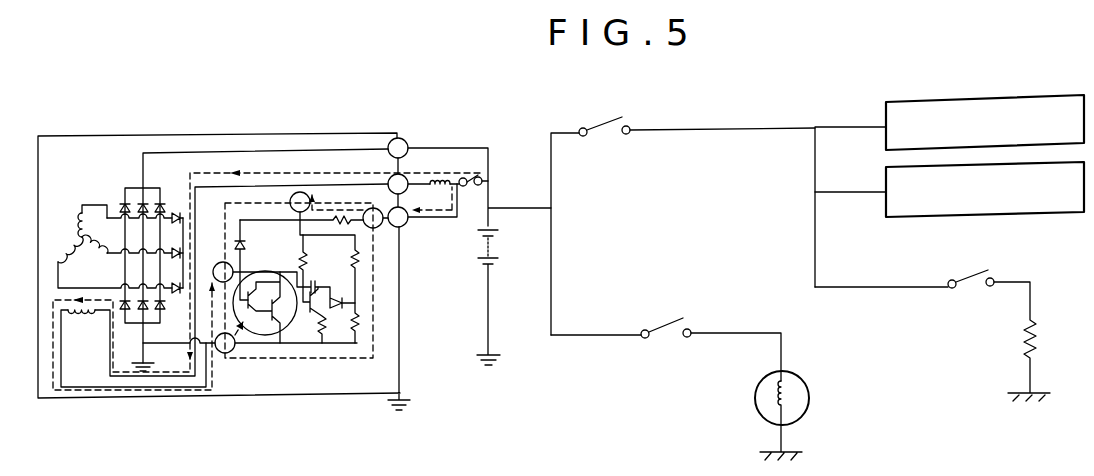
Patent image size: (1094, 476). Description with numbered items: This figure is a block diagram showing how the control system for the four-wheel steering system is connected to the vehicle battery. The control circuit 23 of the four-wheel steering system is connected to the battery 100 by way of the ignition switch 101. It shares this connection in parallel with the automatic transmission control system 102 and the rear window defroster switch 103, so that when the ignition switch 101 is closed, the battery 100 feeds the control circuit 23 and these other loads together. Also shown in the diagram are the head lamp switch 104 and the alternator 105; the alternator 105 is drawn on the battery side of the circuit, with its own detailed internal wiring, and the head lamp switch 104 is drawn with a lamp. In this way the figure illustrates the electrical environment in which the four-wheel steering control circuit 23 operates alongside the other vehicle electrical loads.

The control circuit 23 is at (1024, 98).
The battery 100 is at (471, 269).
The ignition switch 101 is at (600, 119).
The automatic transmission control system 102 is at (1031, 213).
The rear window defroster switch 103 is at (967, 267).
The head lamp switch 104 is at (665, 326).
The alternator 105 is at (318, 394).